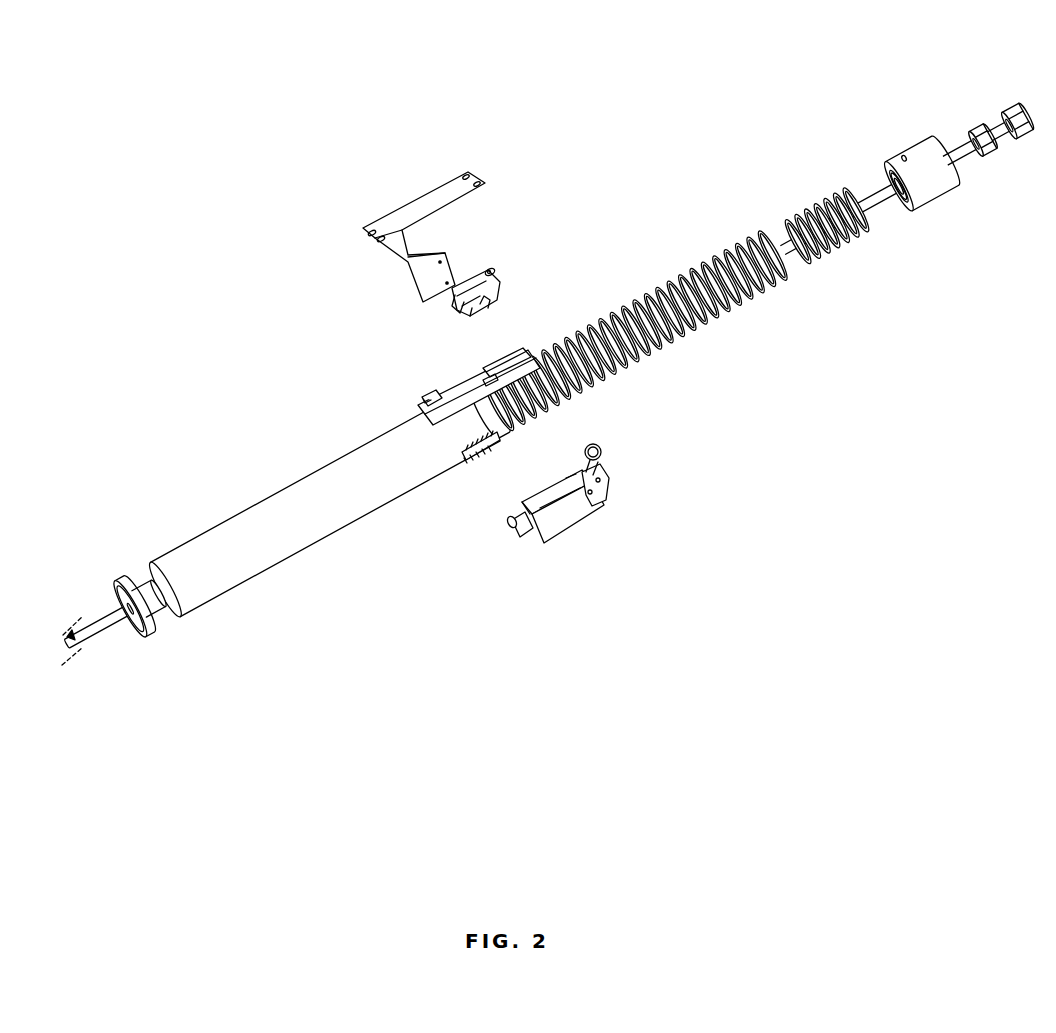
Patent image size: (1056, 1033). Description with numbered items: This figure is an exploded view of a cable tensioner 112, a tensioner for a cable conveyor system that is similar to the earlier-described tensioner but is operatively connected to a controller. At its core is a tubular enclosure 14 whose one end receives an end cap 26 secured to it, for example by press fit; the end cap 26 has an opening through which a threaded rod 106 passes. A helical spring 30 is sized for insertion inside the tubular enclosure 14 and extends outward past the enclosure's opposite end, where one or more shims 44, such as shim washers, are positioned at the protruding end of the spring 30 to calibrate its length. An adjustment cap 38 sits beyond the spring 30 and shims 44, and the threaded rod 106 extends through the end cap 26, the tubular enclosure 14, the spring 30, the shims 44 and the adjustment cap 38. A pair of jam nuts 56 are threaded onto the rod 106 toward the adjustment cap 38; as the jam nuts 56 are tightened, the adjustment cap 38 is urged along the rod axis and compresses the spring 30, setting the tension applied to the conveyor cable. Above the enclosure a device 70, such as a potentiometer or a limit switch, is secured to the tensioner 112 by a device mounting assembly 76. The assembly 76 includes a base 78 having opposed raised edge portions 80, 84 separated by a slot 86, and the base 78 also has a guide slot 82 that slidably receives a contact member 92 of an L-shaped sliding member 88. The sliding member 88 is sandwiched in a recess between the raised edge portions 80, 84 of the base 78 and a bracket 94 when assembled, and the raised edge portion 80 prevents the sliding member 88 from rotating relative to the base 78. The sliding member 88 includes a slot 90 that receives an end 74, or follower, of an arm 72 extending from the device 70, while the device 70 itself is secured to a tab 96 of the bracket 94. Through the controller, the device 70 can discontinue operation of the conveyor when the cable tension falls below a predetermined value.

The tubular enclosure 14 is at (227, 592).
The end cap 26 is at (155, 632).
The helical spring 30 is at (755, 296).
The adjustment cap 38 is at (927, 135).
The shim 44 is at (817, 257).
The jam nut 56 is at (1015, 98).
The device 70 is at (585, 503).
The arm 72 is at (600, 467).
The end 74 is at (603, 448).
The device mounting assembly 76 is at (437, 223).
The base 78 is at (430, 385).
The raised edge portion 80 is at (506, 357).
The guide slot 82 is at (482, 378).
The raised edge portion 84 is at (418, 408).
The slot 86 is at (472, 392).
The L-shaped sliding member 88 is at (463, 295).
The slot 90 is at (481, 299).
The contact member 92 is at (497, 282).
The bracket 94 is at (415, 214).
The tab 96 is at (415, 283).
The threaded rod 106 is at (113, 618).
The cable tensioner 112 is at (255, 316).